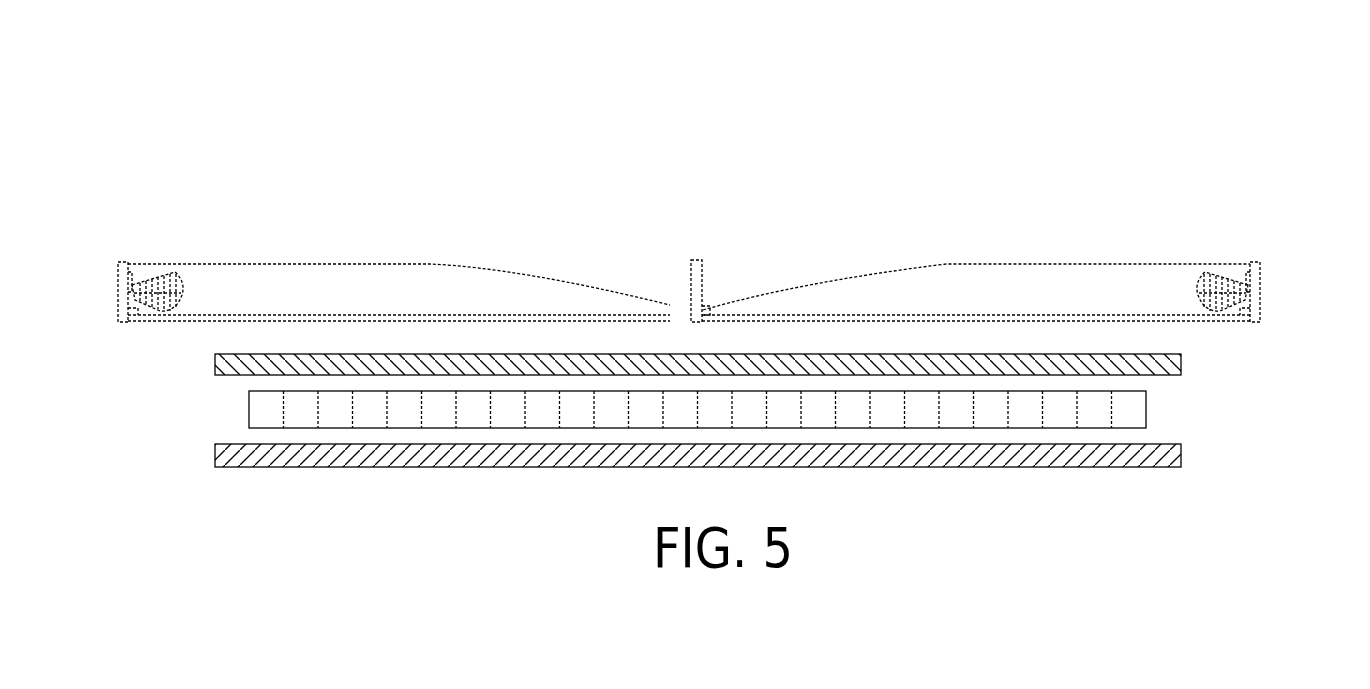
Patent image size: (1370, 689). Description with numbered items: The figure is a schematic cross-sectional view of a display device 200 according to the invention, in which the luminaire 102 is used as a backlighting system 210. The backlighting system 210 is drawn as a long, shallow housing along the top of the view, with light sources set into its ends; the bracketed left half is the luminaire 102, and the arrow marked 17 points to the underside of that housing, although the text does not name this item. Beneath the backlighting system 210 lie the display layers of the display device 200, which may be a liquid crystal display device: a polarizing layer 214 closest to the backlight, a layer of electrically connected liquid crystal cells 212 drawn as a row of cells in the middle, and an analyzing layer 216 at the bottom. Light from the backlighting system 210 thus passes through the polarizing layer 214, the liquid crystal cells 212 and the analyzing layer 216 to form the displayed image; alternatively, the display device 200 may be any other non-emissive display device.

The display device 200 is at (1046, 107).
The backlighting system 210 is at (728, 269).
The luminaire 102 is at (683, 178).
The light source 17 is at (188, 343).
The polarizing layer 214 is at (1183, 366).
The liquid crystal cells 212 is at (1147, 410).
The analyzing layer 216 is at (1183, 457).